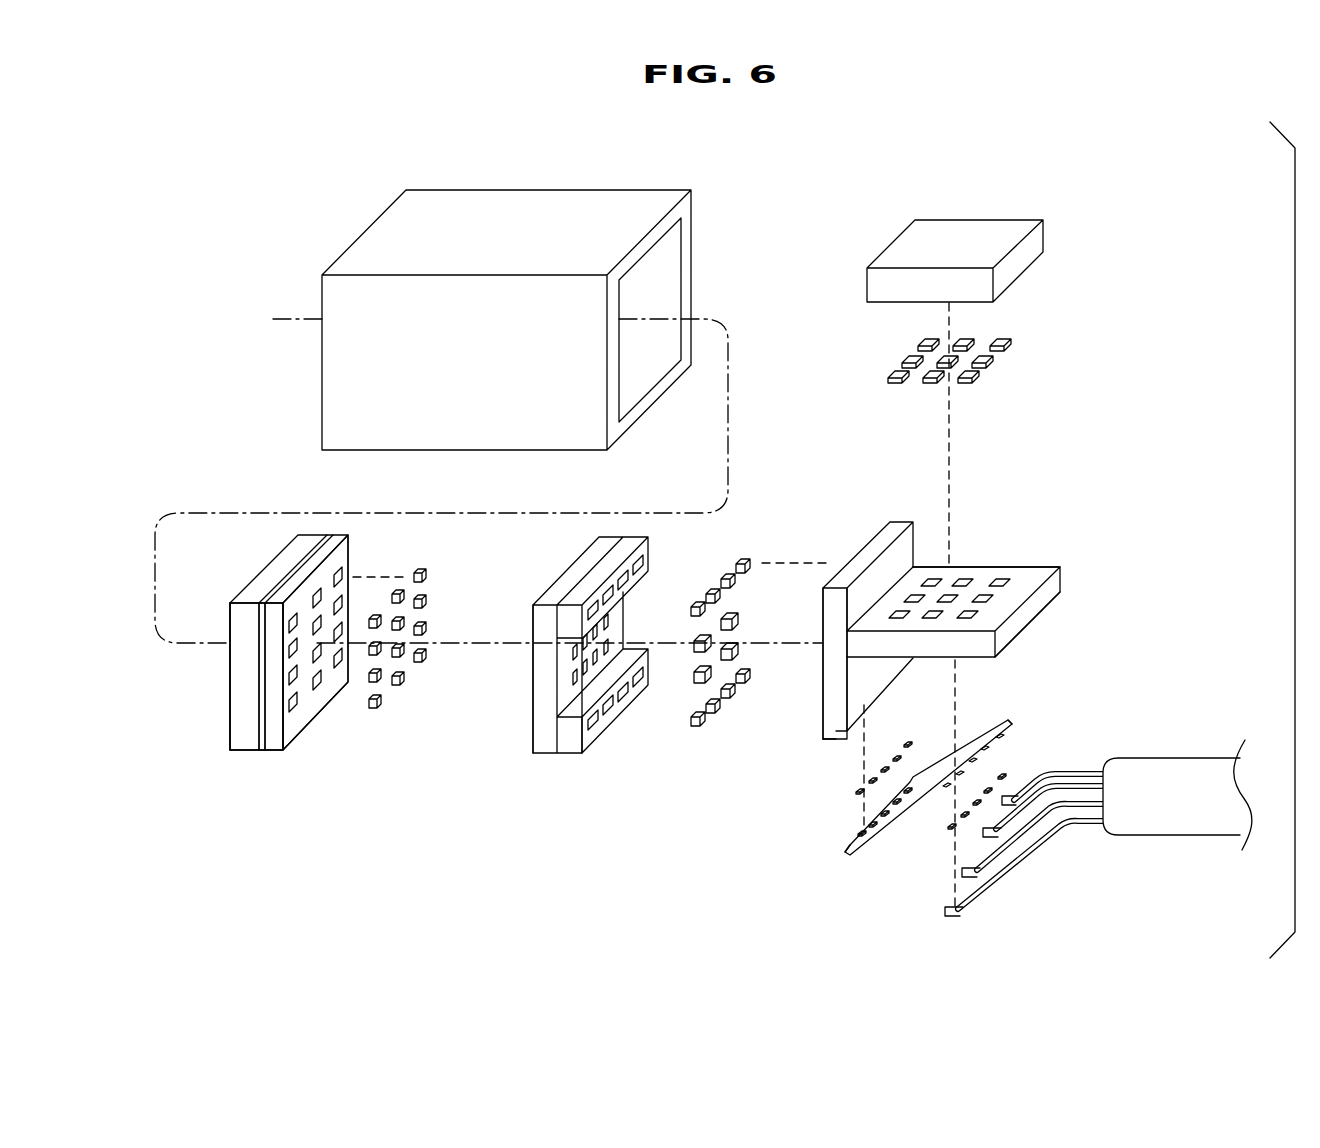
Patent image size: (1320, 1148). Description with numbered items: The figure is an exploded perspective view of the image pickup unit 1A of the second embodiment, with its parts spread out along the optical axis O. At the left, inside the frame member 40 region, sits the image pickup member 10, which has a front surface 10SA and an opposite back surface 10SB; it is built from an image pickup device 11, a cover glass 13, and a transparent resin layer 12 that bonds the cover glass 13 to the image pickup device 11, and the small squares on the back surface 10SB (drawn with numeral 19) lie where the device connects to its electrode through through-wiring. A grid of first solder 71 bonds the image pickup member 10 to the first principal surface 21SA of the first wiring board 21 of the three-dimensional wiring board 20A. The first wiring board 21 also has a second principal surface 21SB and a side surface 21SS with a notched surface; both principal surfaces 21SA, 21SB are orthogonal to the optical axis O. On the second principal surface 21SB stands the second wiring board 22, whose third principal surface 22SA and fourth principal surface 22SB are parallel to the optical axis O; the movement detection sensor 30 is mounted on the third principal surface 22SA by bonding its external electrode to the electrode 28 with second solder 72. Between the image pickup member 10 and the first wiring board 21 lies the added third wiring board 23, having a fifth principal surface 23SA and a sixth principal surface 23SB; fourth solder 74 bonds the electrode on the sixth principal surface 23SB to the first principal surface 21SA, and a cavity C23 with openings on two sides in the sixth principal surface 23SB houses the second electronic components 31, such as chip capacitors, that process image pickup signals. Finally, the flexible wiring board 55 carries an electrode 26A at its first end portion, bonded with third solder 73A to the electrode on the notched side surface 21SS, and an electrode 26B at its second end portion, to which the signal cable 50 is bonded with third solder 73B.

The image pickup unit 1A is at (1145, 223).
The image pickup member 10 is at (285, 703).
The front surface 10SA is at (231, 716).
The back surface 10SB is at (350, 558).
The image pickup device 11 is at (272, 752).
The transparent resin layer 12 is at (262, 752).
The cover glass 13 is at (240, 752).
The pixel 19 is at (316, 675).
The three-dimensional wiring board 20A is at (951, 667).
The first wiring board 21 is at (898, 522).
The first principal surface 21SA is at (822, 703).
The second principal surface 21SB is at (851, 703).
The side surface 21SS is at (832, 741).
The second wiring board 22 is at (938, 565).
The third principal surface 22SA is at (1027, 571).
The fourth principal surface 22SB is at (1027, 627).
The third wiring board 23 is at (651, 644).
The fifth principal surface 23SA is at (533, 737).
The sixth principal surface 23SB is at (586, 739).
The cavity C23 is at (612, 657).
The electrode 26A is at (858, 833).
The electrode 26B is at (993, 722).
The electrode 28 is at (951, 593).
The movement detection sensor 30 is at (957, 220).
The second electronic components 31 is at (741, 617).
The frame member 40 is at (557, 190).
The signal cable 50 is at (1197, 757).
The flexible wiring board 55 is at (911, 788).
The first solder 71 is at (370, 708).
The second solder 72 is at (1011, 353).
The third solder 73A is at (909, 742).
The third solder 73B is at (1007, 775).
The fourth solder 74 is at (703, 728).
The optical axis O is at (488, 474).